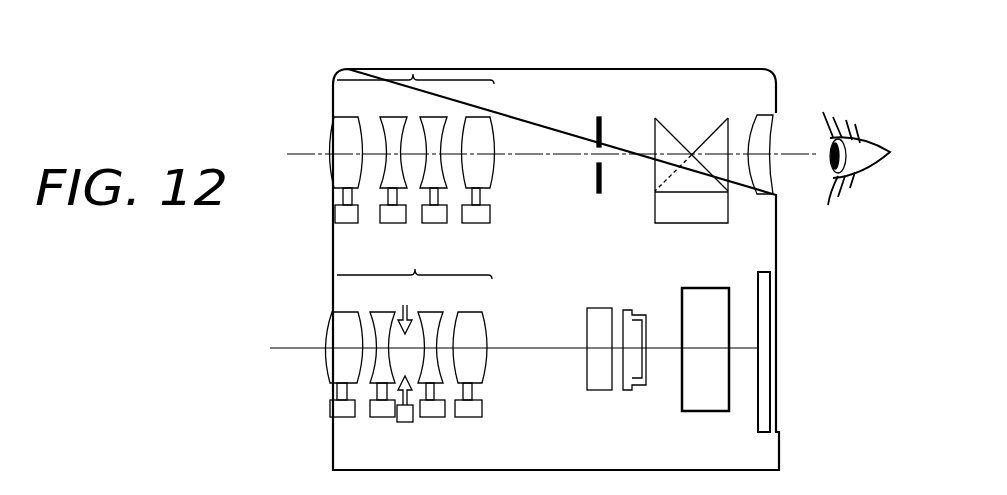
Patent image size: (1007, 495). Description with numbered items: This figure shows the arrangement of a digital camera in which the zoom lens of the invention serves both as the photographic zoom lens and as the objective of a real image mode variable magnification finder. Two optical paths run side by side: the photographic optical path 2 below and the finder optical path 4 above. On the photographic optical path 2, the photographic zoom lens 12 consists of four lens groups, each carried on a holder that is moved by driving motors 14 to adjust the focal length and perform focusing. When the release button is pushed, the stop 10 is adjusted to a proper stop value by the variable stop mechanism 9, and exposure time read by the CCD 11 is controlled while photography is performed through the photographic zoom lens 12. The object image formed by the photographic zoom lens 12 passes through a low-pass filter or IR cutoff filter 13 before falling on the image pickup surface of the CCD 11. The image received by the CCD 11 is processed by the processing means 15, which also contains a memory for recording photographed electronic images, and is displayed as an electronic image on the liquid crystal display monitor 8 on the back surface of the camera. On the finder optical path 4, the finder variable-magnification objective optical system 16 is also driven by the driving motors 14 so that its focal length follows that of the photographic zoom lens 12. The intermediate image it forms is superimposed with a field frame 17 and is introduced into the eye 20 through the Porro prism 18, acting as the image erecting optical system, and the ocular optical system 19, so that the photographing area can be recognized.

The photographic optical path 2 is at (288, 347).
The finder optical path 4 is at (300, 154).
The liquid crystal display monitor 8 is at (768, 388).
The variable stop mechanism 9 is at (399, 422).
The stop 10 is at (413, 400).
The CCD 11 is at (640, 385).
The photographic zoom lens 12 is at (408, 315).
The IR cutoff filter 13 is at (596, 390).
The driving motors 14 is at (338, 213).
The processing means 15 is at (682, 314).
The finder variable-magnification objective optical system 16 is at (413, 74).
The field frame 17 is at (600, 115).
The Porro prism 18 is at (705, 138).
The ocular optical system 19 is at (763, 195).
The eye 20 is at (876, 144).